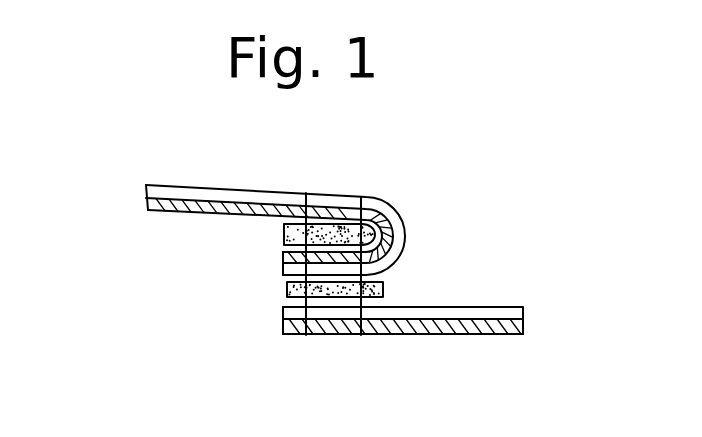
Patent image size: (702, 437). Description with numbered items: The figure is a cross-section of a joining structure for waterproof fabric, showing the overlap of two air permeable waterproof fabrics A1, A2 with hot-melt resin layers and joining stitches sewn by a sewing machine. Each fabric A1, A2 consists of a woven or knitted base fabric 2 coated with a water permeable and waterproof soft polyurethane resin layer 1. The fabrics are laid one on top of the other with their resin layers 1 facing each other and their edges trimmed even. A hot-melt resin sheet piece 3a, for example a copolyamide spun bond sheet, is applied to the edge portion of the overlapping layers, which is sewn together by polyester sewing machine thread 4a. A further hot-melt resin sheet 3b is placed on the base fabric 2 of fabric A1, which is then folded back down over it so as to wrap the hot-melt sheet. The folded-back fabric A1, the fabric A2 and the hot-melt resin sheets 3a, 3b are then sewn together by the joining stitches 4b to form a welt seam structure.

The soft polyurethane resin layer 1 is at (382, 213).
The base fabric 2 is at (182, 208).
The hot-melt resin sheet piece 3a is at (287, 288).
The hot-melt resin sheet 3b is at (284, 236).
The sewing machine thread 4a is at (370, 336).
The joining stitches 4b is at (293, 336).
The air permeable waterproof fabric A1 is at (139, 197).
The air permeable waterproof fabric A2 is at (528, 320).